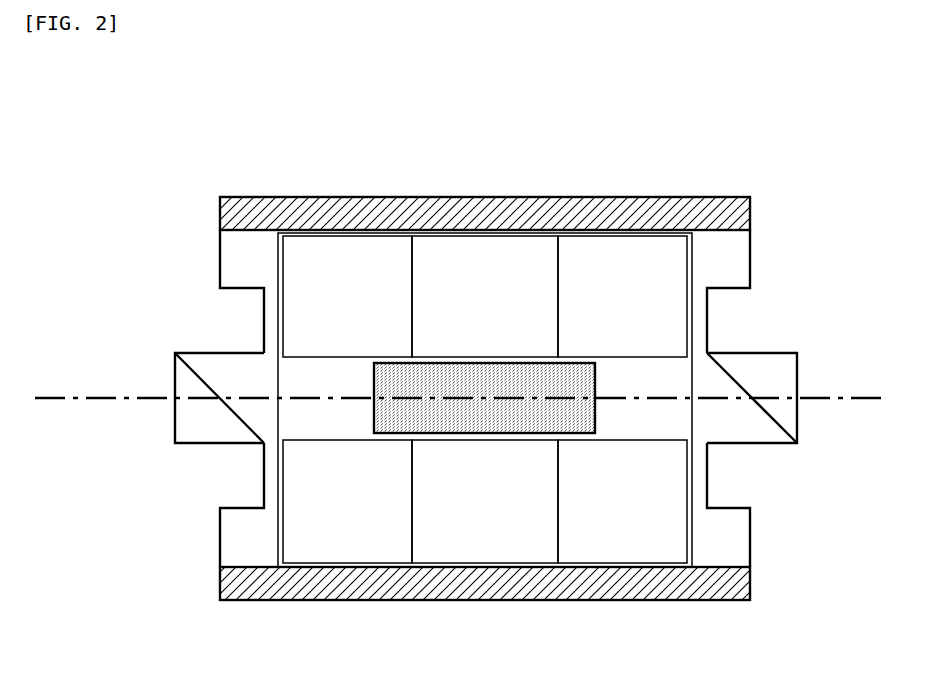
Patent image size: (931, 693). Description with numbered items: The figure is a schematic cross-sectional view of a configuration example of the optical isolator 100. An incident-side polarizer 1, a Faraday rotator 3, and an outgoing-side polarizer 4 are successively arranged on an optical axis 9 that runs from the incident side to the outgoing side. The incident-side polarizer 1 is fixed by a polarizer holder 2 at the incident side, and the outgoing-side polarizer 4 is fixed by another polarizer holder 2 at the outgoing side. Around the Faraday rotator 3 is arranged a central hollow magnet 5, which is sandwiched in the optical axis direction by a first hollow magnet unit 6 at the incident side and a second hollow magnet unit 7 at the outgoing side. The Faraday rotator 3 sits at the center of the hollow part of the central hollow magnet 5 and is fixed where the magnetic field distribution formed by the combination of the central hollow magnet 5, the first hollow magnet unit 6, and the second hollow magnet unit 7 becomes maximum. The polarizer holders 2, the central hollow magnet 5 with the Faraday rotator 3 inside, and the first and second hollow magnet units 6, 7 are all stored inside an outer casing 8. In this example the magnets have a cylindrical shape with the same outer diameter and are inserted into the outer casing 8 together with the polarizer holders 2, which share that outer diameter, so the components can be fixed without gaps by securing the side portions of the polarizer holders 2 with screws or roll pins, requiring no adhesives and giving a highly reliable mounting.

The optical isolator 100 is at (47, 109).
The incident-side polarizer 1 is at (208, 370).
The polarizer holder 2 is at (237, 523).
The Faraday rotator 3 is at (462, 417).
The outgoing-side polarizer 4 is at (780, 365).
The central hollow magnet 5 is at (438, 257).
The first hollow magnet unit 6 is at (302, 257).
The second hollow magnet unit 7 is at (590, 257).
The outer casing 8 is at (713, 588).
The optical axis 9 is at (105, 397).